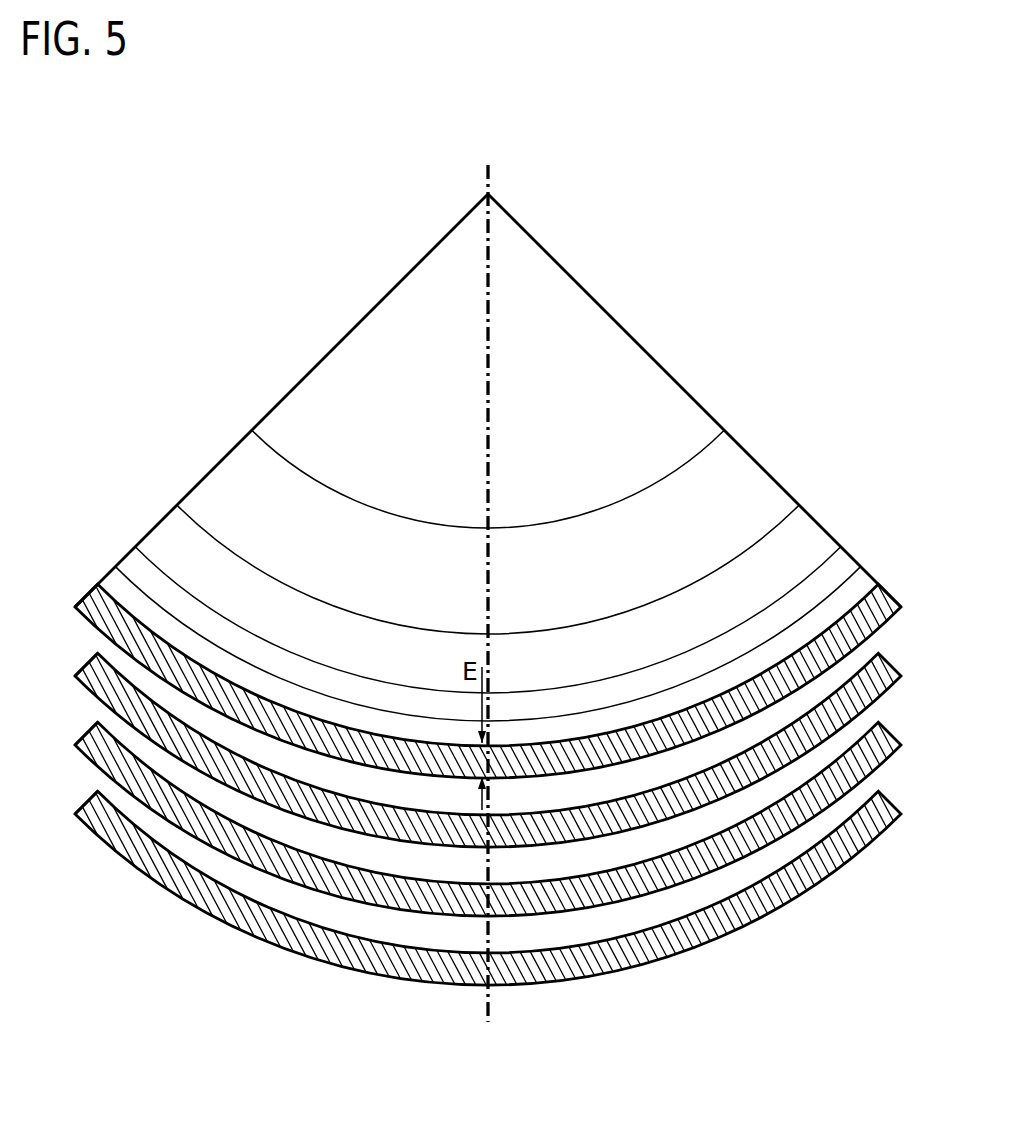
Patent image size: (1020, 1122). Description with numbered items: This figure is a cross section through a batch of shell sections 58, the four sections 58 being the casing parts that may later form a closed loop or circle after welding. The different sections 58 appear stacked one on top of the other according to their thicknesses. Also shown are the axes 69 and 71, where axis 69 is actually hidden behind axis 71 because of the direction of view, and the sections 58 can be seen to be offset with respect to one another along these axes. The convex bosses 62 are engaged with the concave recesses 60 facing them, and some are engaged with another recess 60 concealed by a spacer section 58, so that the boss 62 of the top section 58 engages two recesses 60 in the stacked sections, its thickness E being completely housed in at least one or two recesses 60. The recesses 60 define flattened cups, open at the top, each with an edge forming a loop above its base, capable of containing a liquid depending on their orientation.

The shell section 58 is at (657, 737).
The concave recess 60 is at (548, 607).
The convex boss 62 is at (88, 623).
The axis 69 is at (488, 333).
The axis 71 is at (488, 333).